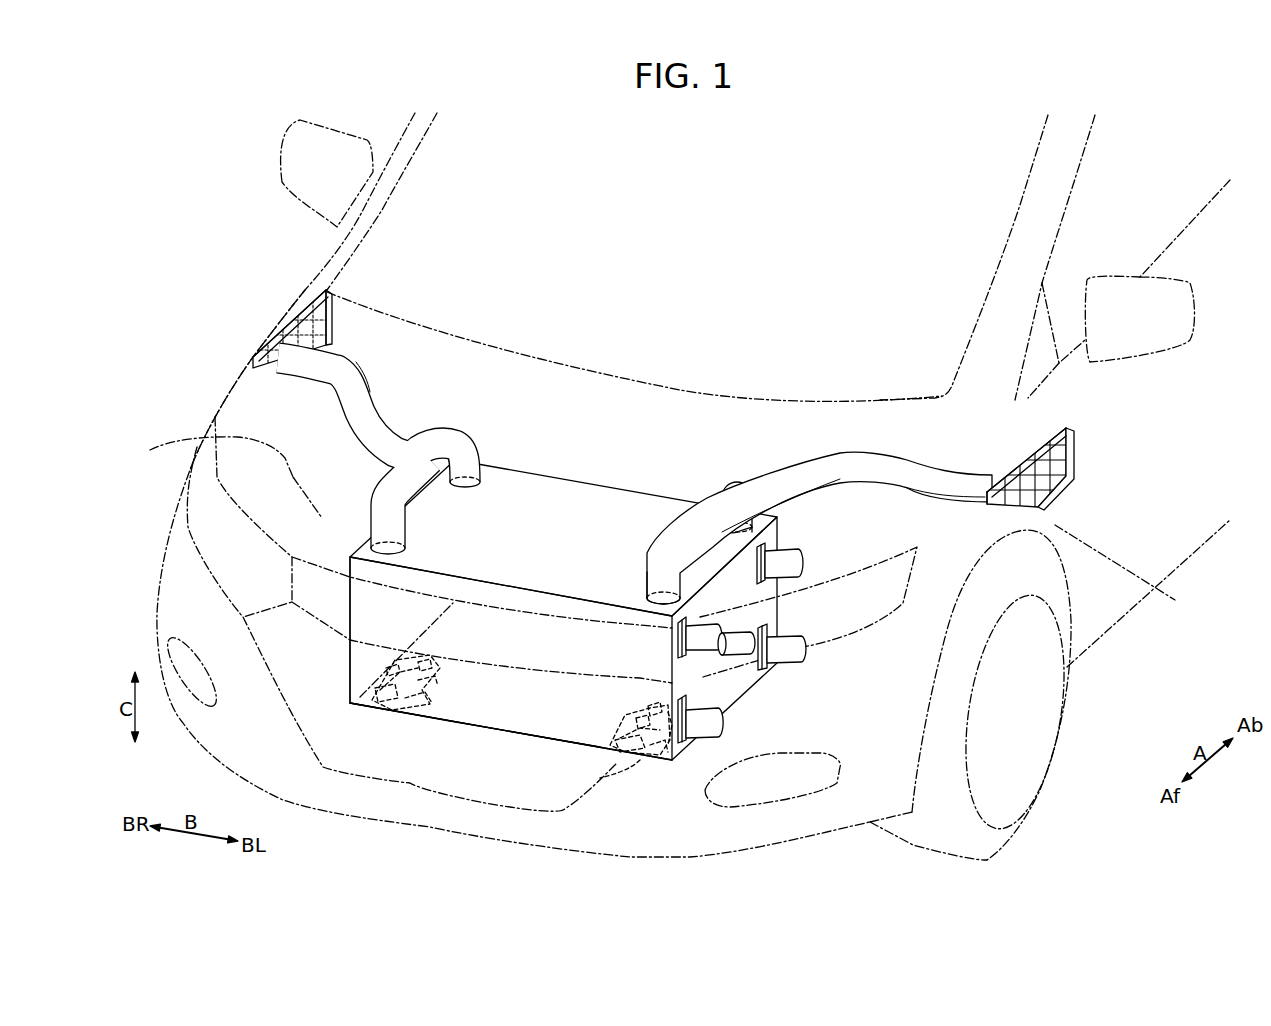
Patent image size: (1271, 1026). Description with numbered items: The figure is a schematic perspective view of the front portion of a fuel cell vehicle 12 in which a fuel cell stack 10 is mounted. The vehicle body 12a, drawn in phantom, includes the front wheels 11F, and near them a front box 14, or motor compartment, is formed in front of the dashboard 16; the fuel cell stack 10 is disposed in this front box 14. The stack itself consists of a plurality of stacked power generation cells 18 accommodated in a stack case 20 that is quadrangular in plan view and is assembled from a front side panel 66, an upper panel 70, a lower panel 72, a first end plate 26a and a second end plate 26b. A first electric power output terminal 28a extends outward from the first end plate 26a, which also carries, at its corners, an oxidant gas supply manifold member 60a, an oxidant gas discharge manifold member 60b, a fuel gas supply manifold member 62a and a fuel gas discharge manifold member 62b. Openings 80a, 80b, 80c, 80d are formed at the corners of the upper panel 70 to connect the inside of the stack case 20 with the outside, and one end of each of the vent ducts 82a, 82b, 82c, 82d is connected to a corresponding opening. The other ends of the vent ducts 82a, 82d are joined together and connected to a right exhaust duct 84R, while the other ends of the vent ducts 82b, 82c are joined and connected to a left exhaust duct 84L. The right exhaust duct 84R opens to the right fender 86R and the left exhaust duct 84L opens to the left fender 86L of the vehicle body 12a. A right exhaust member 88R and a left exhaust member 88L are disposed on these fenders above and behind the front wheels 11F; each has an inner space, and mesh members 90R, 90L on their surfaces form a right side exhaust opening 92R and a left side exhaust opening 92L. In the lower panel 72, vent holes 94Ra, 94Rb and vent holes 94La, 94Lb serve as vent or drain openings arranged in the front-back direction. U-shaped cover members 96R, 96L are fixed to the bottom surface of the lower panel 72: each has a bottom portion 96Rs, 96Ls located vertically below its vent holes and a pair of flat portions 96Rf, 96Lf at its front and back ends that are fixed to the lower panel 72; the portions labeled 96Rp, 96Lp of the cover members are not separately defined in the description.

The fuel cell stack 10 is at (541, 448).
The front wheels 11F is at (1033, 807).
The fuel cell vehicle 12 is at (214, 226).
The vehicle body 12a is at (228, 365).
The front box 14 is at (209, 457).
The dashboard 16 is at (549, 368).
The power generation cells 18 is at (536, 738).
The stack case 20 is at (502, 742).
The first end plate 26a is at (763, 680).
The second end plate 26b is at (349, 675).
The first electric power output terminal 28a is at (738, 645).
The oxidant gas supply manifold member 60a is at (802, 558).
The oxidant gas discharge manifold member 60b is at (723, 733).
The fuel gas supply manifold member 62a is at (697, 634).
The fuel gas discharge manifold member 62b is at (787, 643).
The front side panel 66 is at (524, 730).
The upper panel 70 is at (586, 492).
The lower panel 72 is at (452, 705).
The opening 80a is at (388, 548).
The opening 80b is at (742, 530).
The opening 80c is at (653, 590).
The opening 80d is at (466, 484).
The vent duct 82a is at (380, 497).
The vent duct 82b is at (744, 482).
The vent duct 82c is at (690, 540).
The vent duct 82d is at (470, 450).
The right exhaust duct 84R is at (320, 377).
The left exhaust duct 84L is at (920, 472).
The right fender 86R is at (232, 386).
The left fender 86L is at (1142, 579).
The right exhaust member 88R is at (296, 297).
The left exhaust member 88L is at (1087, 445).
The mesh member 90R is at (320, 333).
The mesh member 90L is at (1060, 462).
The right side exhaust opening 92R is at (330, 318).
The left side exhaust opening 92L is at (1053, 480).
The vent hole 94Ra is at (390, 667).
The vent hole 94Rb is at (427, 667).
The vent hole 94La is at (637, 725).
The vent hole 94Lb is at (647, 710).
The cover member 96R is at (373, 676).
The flat portions 96Rf is at (430, 667).
The right bracket plate portion 96Rp is at (423, 700).
The bottom portion 96Rs is at (423, 700).
The cover member 96L is at (627, 713).
The flat portions 96Lf is at (720, 717).
The left bracket plate portion 96Lp is at (663, 763).
The bottom portion 96Ls is at (677, 767).